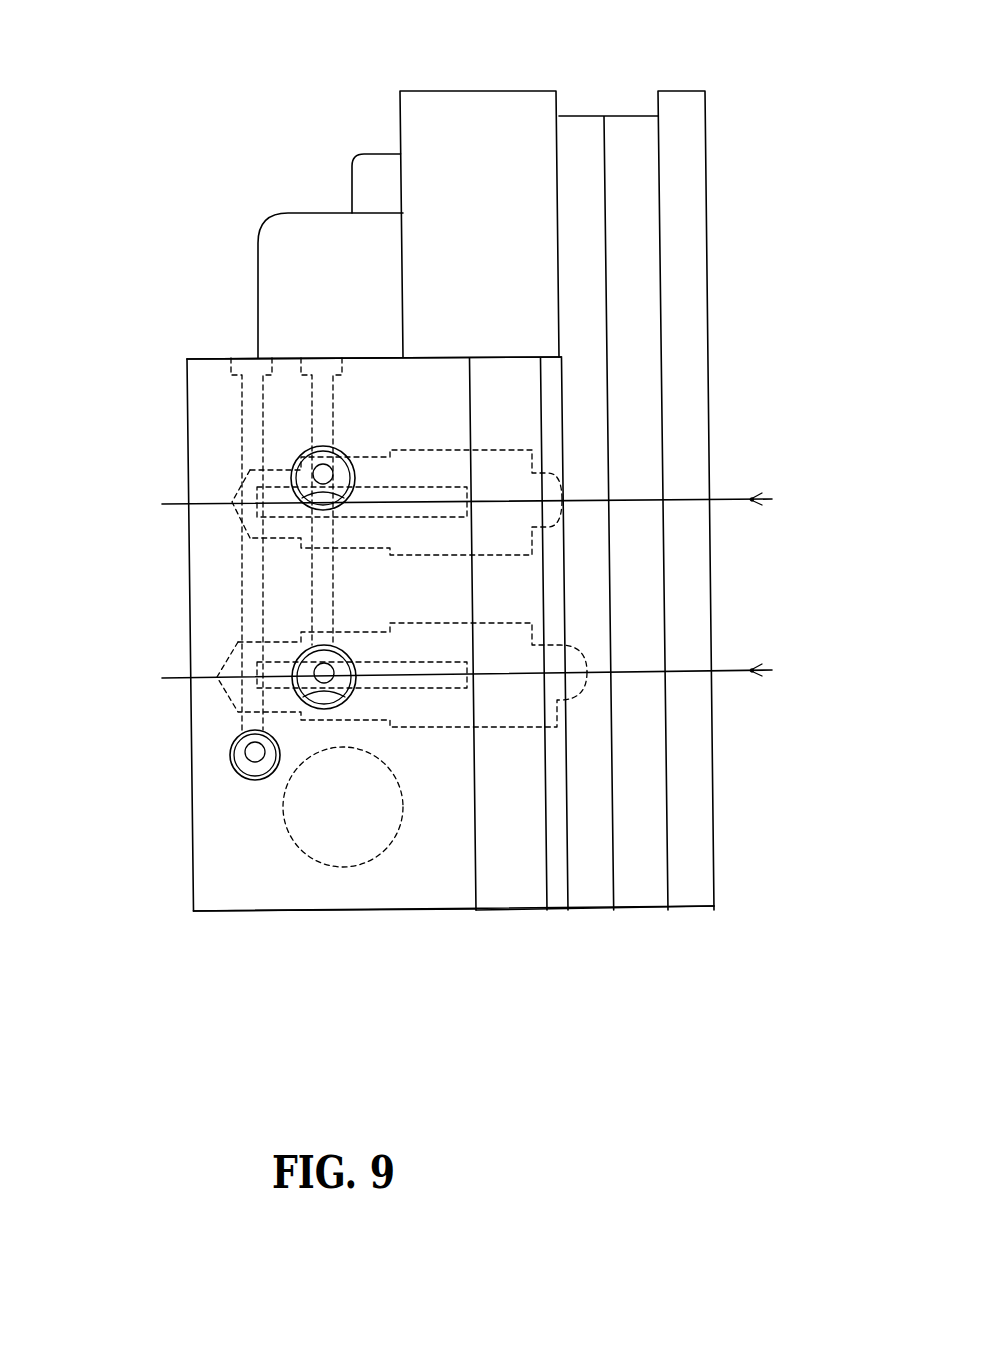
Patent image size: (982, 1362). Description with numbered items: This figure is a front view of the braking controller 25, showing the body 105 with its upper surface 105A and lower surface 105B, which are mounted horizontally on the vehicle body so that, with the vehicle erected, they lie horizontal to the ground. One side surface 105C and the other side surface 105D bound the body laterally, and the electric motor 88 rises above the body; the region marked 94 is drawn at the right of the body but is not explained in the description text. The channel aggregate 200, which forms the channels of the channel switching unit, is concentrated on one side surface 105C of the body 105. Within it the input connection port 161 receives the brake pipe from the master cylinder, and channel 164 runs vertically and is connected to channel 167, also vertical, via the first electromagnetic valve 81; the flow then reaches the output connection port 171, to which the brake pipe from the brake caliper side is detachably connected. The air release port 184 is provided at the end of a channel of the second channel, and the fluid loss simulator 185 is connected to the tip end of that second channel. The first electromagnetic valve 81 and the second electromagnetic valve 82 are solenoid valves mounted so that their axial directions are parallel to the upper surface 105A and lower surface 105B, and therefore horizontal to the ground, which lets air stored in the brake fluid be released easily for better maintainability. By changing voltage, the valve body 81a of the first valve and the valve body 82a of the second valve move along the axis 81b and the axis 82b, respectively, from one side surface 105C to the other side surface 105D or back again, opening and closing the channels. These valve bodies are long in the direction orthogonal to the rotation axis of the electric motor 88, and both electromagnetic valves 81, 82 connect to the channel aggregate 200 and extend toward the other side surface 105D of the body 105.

The braking controller 25 is at (126, 125).
The electric motor 88 is at (380, 180).
The head body 94 is at (698, 773).
The body 105 is at (348, 893).
The upper surface 105A is at (372, 357).
The lower surface 105B is at (253, 910).
The one side surface 105C is at (189, 806).
The other side surface 105D is at (473, 817).
The channel 164 is at (240, 402).
The channel 167 is at (312, 397).
The output connection port 171 is at (295, 470).
The input connection port 161 is at (300, 700).
The air release port 184 is at (230, 756).
The fluid loss simulator 185 is at (393, 850).
The channel aggregate 200 is at (232, 583).
The second electromagnetic valve 82 is at (495, 447).
The valve body 82a is at (418, 468).
The axis 82b is at (772, 497).
The first electromagnetic valve 81 is at (503, 620).
The valve body 81a is at (432, 690).
The axis 81b is at (772, 668).